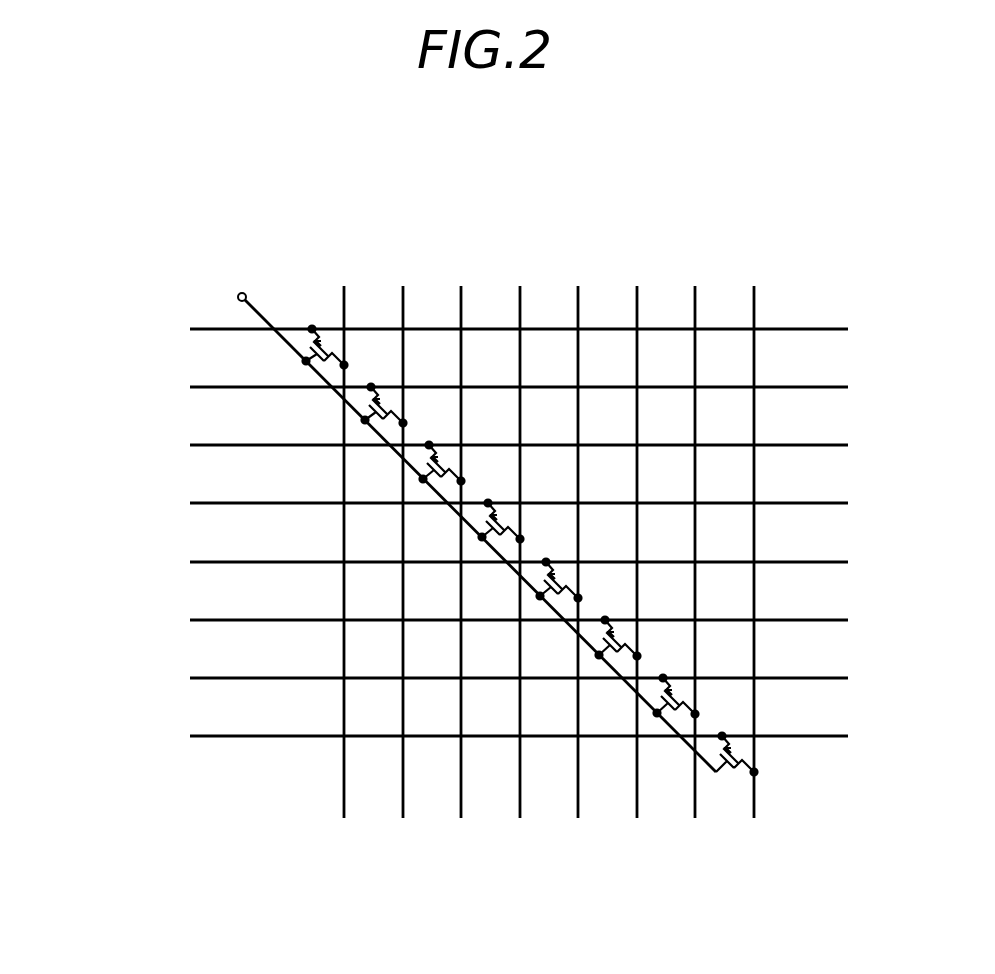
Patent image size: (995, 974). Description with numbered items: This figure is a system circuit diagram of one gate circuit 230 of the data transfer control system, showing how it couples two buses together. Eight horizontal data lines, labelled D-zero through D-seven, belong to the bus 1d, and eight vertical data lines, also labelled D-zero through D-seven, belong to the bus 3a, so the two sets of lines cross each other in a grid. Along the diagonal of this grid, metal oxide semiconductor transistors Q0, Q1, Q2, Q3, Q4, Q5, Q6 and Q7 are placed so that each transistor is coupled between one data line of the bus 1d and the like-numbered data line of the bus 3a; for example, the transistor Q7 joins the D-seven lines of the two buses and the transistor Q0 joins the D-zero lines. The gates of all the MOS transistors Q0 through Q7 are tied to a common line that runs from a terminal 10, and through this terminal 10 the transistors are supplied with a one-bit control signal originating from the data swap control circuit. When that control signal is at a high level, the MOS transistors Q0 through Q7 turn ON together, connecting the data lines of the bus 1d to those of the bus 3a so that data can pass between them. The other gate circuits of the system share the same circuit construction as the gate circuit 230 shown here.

The terminal 10 is at (246, 292).
The bus 1d is at (127, 311).
The bus 3a is at (792, 868).
The gate circuit 230 is at (672, 175).
The MOS transistor Q0 is at (753, 754).
The MOS transistor Q1 is at (692, 696).
The MOS transistor Q2 is at (634, 638).
The MOS transistor Q3 is at (575, 580).
The MOS transistor Q4 is at (517, 521).
The MOS transistor Q5 is at (458, 463).
The MOS transistor Q6 is at (400, 405).
The MOS transistor Q7 is at (342, 347).